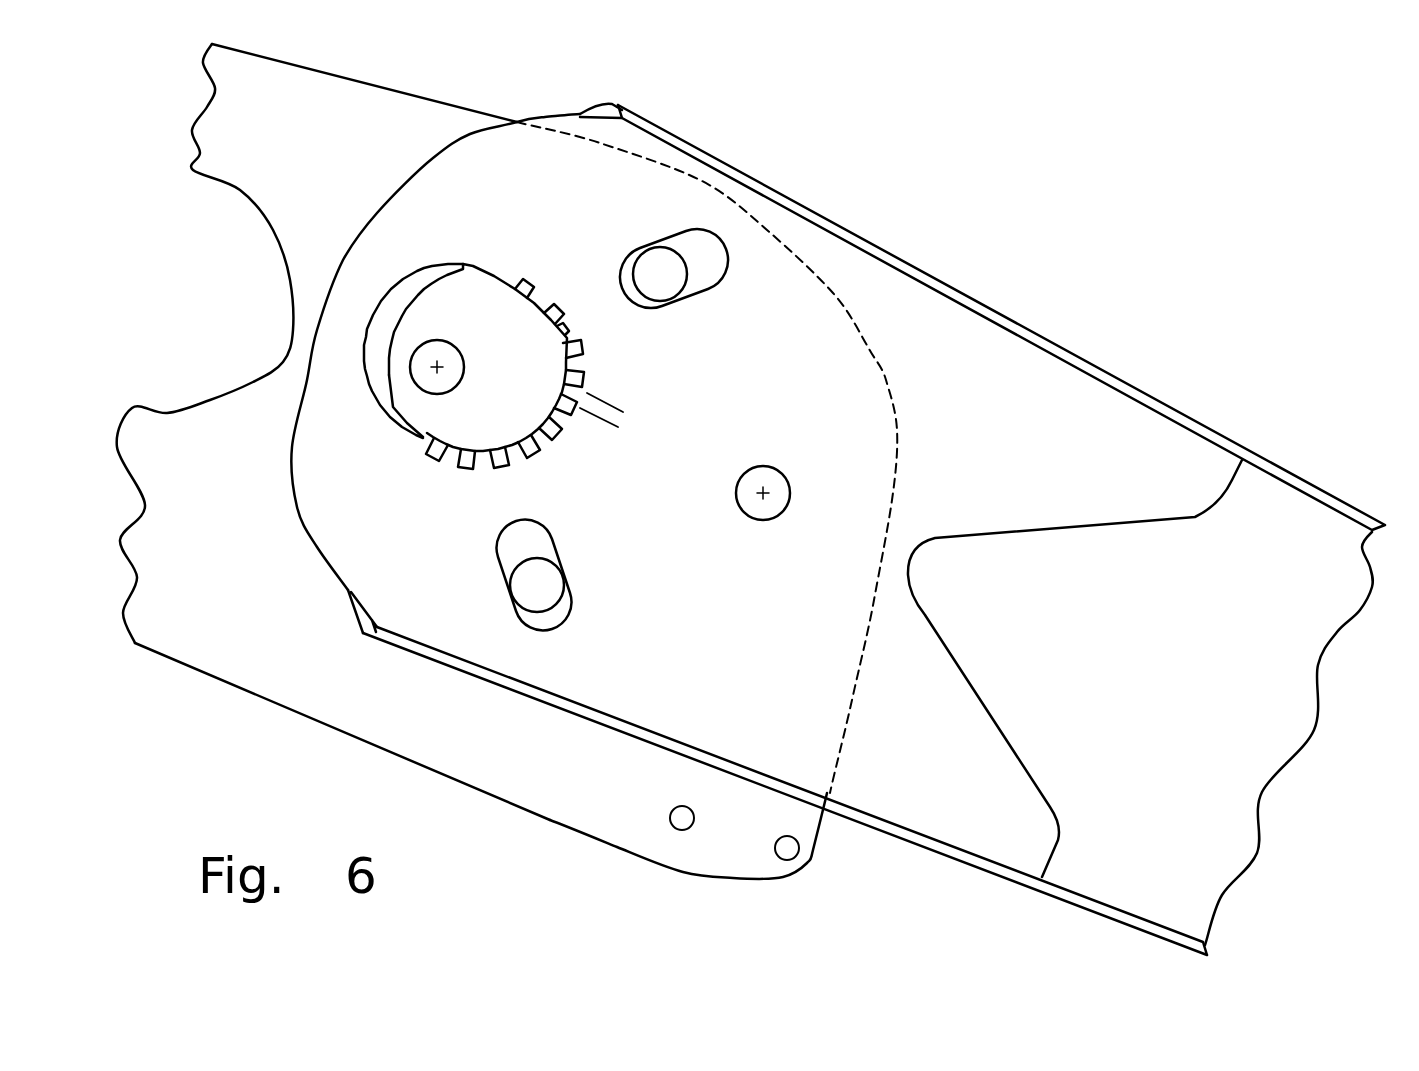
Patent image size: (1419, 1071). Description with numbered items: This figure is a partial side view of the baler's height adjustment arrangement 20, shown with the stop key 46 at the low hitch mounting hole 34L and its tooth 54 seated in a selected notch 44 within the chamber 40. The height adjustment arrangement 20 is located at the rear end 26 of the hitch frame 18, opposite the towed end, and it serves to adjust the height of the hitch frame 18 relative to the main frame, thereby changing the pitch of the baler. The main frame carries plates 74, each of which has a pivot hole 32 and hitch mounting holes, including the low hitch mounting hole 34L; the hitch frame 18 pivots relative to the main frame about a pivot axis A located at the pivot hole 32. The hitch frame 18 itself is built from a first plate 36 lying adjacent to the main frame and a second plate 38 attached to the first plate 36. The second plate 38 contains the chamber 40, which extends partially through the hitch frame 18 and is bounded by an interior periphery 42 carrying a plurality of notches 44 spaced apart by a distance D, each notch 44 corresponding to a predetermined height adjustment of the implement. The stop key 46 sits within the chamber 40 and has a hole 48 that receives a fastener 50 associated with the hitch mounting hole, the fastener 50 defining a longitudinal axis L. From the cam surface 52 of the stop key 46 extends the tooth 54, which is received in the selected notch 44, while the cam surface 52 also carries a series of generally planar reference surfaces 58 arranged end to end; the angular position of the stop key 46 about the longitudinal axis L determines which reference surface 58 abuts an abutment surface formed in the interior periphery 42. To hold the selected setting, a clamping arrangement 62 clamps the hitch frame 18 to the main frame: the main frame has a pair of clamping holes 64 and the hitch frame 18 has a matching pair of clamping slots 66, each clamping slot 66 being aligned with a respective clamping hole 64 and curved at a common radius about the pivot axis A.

The hitch frame 18 is at (1325, 488).
The height adjustment arrangement 20 is at (724, 324).
The rear end 26 is at (697, 146).
The pivot hole 32 is at (781, 515).
The low hitch mounting hole 34L is at (432, 340).
The first plate 36 is at (1118, 877).
The second plate 38 is at (1013, 380).
The chamber 40 is at (479, 372).
The interior periphery 42 is at (368, 348).
The notches 44 is at (513, 452).
The stop key 46 is at (448, 418).
The hole 48 is at (452, 354).
The fastener 50 is at (418, 362).
The cam surface 52 is at (540, 410).
The tooth 54 is at (584, 347).
The reference surfaces 58 is at (550, 323).
The clamping arrangement 62 is at (583, 412).
The clamping holes 64 is at (572, 565).
The clamping slots 66 is at (688, 232).
The plates 74 is at (300, 717).
The pivot axis A is at (789, 487).
The longitudinal axis L is at (442, 371).
The distance D is at (631, 384).